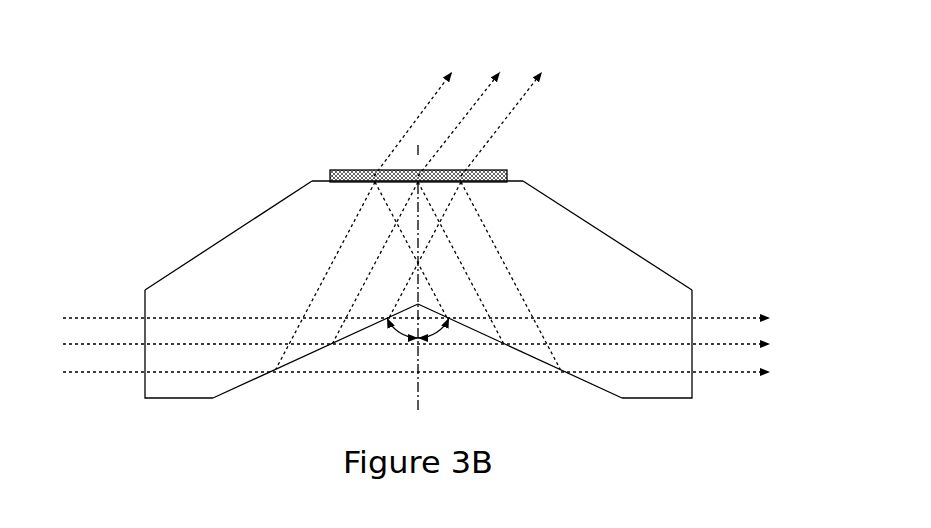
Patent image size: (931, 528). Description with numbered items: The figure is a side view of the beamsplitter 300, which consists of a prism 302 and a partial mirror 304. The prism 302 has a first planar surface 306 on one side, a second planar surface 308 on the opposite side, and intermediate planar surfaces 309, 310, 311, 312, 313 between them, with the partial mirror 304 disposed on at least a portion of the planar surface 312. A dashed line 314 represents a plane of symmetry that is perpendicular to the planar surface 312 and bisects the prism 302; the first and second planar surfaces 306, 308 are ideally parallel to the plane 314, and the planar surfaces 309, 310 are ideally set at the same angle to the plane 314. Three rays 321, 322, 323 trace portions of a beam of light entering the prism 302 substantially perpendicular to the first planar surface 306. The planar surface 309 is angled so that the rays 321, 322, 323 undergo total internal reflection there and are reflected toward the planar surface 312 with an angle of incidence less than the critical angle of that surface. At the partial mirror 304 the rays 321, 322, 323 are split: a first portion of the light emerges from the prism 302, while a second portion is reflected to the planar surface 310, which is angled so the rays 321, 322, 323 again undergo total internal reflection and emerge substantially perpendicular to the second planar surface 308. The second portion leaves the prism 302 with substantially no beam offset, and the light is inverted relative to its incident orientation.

The beamsplitter 300 is at (666, 141).
The prism 302 is at (528, 181).
The partial mirror 304 is at (347, 169).
The first planar surface 306 is at (143, 393).
The second planar surface 308 is at (693, 397).
The planar surface 309 is at (290, 367).
The planar surface 310 is at (547, 367).
The planar surface 311 is at (255, 217).
The planar surface 312 is at (314, 179).
The planar surface 313 is at (625, 245).
The plane-of-symmetry 314 is at (420, 383).
The ray 321 is at (432, 95).
The ray 322 is at (480, 92).
The ray 323 is at (523, 92).